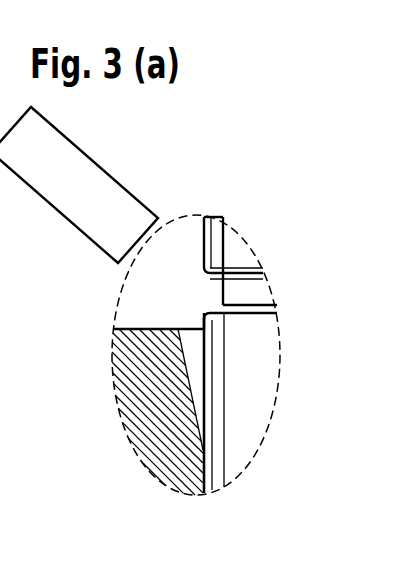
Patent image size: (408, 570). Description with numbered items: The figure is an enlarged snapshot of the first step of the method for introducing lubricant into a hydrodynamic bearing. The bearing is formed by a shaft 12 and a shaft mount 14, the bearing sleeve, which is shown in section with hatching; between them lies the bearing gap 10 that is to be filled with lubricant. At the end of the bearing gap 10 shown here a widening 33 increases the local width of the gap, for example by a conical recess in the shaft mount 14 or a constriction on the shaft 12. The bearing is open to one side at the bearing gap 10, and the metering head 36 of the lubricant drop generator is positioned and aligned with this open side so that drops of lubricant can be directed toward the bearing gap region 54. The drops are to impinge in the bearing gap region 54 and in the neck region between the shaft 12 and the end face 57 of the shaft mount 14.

The metering head 36 is at (67, 158).
The shaft 12 is at (257, 350).
The widening 33 is at (195, 395).
The bearing gap 10 is at (195, 352).
The end face 57 is at (157, 324).
The bearing gap region 54 is at (186, 320).
The shaft mount 14 is at (157, 440).